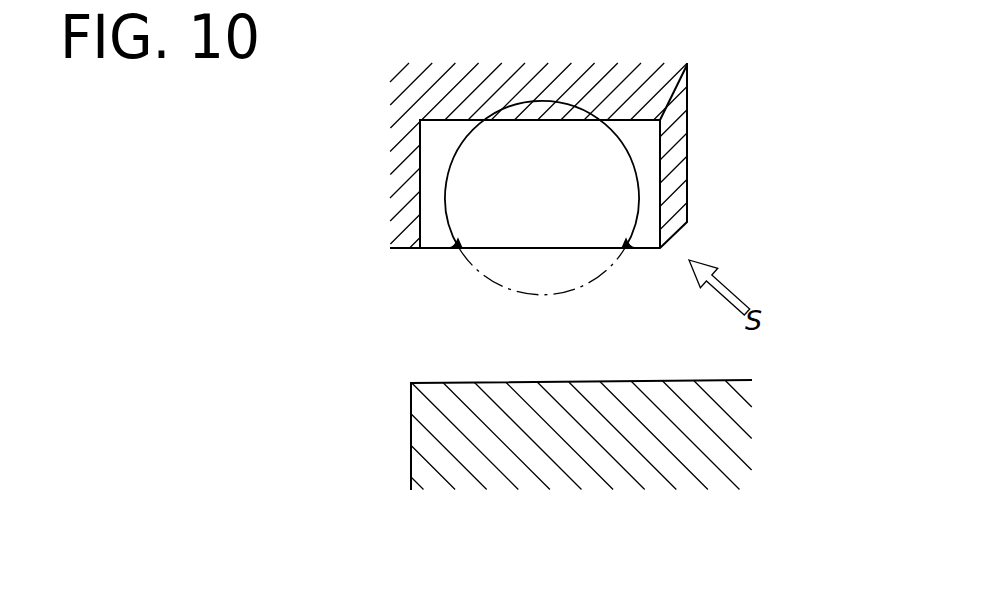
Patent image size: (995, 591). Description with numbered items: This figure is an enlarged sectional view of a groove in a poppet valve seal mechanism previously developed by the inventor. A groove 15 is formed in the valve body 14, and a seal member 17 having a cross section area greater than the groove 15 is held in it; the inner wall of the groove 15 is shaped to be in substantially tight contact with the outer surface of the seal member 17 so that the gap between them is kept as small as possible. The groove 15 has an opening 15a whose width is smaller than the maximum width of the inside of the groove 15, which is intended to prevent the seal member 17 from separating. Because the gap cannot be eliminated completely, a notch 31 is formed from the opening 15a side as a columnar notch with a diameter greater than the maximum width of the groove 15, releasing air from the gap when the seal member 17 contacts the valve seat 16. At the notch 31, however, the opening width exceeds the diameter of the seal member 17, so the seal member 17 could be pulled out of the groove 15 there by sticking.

The valve body 14 is at (665, 93).
The groove 15 is at (632, 144).
The opening 15a is at (455, 249).
The valve seat 16 is at (465, 397).
The seal member 17 is at (567, 285).
The notch 31 is at (428, 205).